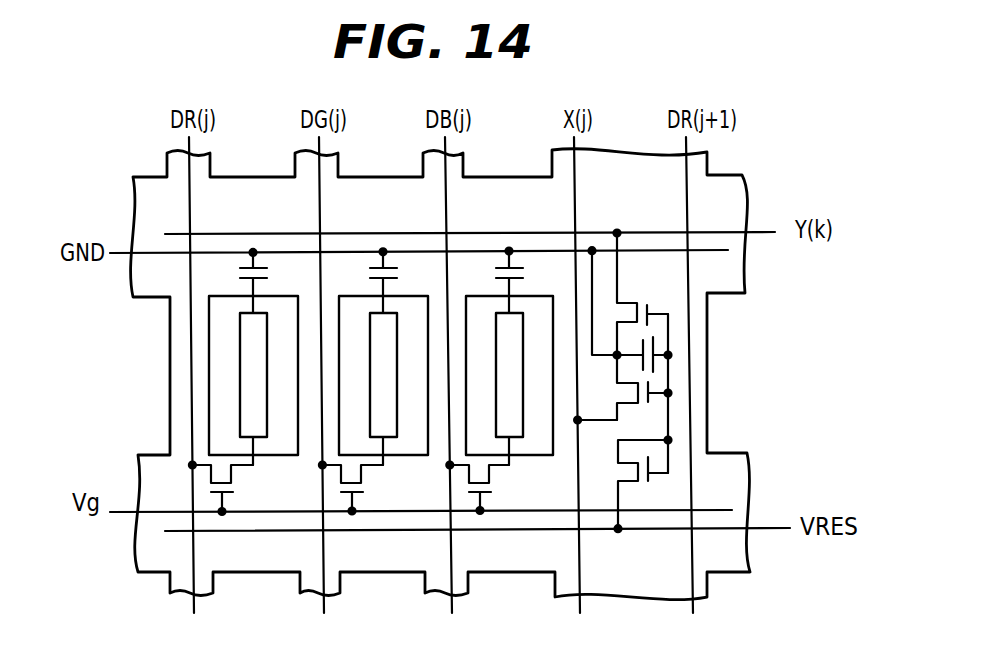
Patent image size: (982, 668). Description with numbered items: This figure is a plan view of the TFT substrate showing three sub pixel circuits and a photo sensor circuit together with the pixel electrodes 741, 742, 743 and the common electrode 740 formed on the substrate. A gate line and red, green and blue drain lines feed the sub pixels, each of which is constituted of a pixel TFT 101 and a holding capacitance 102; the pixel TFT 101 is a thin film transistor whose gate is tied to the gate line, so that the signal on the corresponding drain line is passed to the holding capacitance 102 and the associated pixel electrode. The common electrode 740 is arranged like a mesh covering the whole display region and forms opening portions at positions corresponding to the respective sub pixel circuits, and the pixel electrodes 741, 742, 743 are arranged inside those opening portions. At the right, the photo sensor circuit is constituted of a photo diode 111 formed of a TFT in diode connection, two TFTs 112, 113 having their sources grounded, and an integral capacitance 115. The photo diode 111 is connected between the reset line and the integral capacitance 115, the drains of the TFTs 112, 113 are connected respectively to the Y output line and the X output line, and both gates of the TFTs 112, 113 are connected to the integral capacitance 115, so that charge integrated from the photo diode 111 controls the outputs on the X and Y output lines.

The common electrode 740 is at (732, 207).
The pixel electrode 741 is at (248, 345).
The pixel electrode 742 is at (378, 345).
The pixel electrode 743 is at (505, 345).
The holding capacitance 102 is at (268, 277).
The pixel TFT 101 is at (223, 473).
The TFT 113 is at (630, 304).
The integral capacitance 115 is at (653, 342).
The TFT 112 is at (623, 395).
The photo diode 111 is at (628, 478).